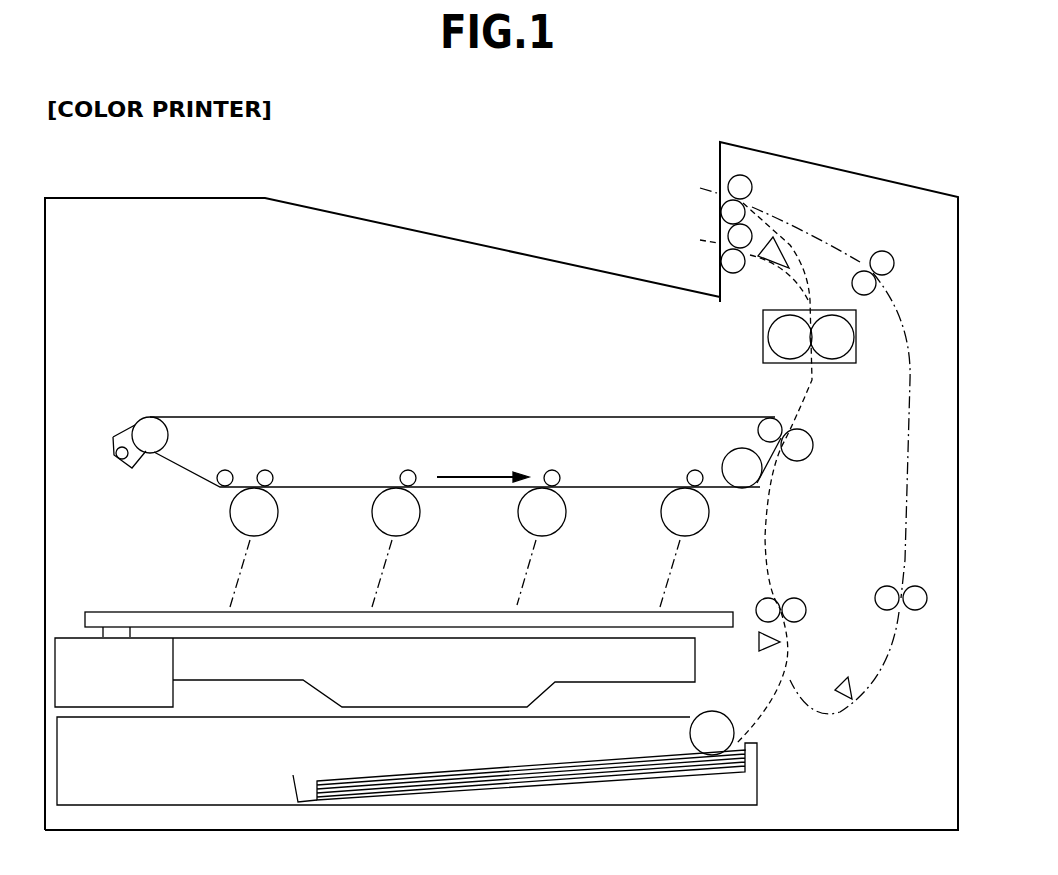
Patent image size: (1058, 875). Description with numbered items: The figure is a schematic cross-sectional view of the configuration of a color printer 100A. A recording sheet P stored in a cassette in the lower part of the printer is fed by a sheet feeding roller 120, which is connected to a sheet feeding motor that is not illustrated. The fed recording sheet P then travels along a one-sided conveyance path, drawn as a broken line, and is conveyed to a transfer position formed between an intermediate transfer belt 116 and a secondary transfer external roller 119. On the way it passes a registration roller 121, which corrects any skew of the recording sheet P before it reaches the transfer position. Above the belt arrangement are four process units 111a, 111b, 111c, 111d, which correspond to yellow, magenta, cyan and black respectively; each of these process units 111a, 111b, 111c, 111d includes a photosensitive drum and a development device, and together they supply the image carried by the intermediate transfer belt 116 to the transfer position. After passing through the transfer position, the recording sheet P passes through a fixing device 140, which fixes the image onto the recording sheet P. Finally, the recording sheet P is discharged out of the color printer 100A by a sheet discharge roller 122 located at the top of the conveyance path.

The color printer 100A is at (120, 198).
The intermediate transfer belt 116 is at (522, 417).
The process unit 111a is at (240, 517).
The process unit 111b is at (383, 517).
The process unit 111c is at (528, 517).
The process unit 111d is at (671, 517).
The secondary transfer external roller 119 is at (814, 446).
The fixing device 140 is at (763, 347).
The sheet discharge roller 122 is at (728, 262).
The registration roller 121 is at (762, 615).
The sheet feeding roller 120 is at (690, 733).
The recording sheet P is at (551, 765).